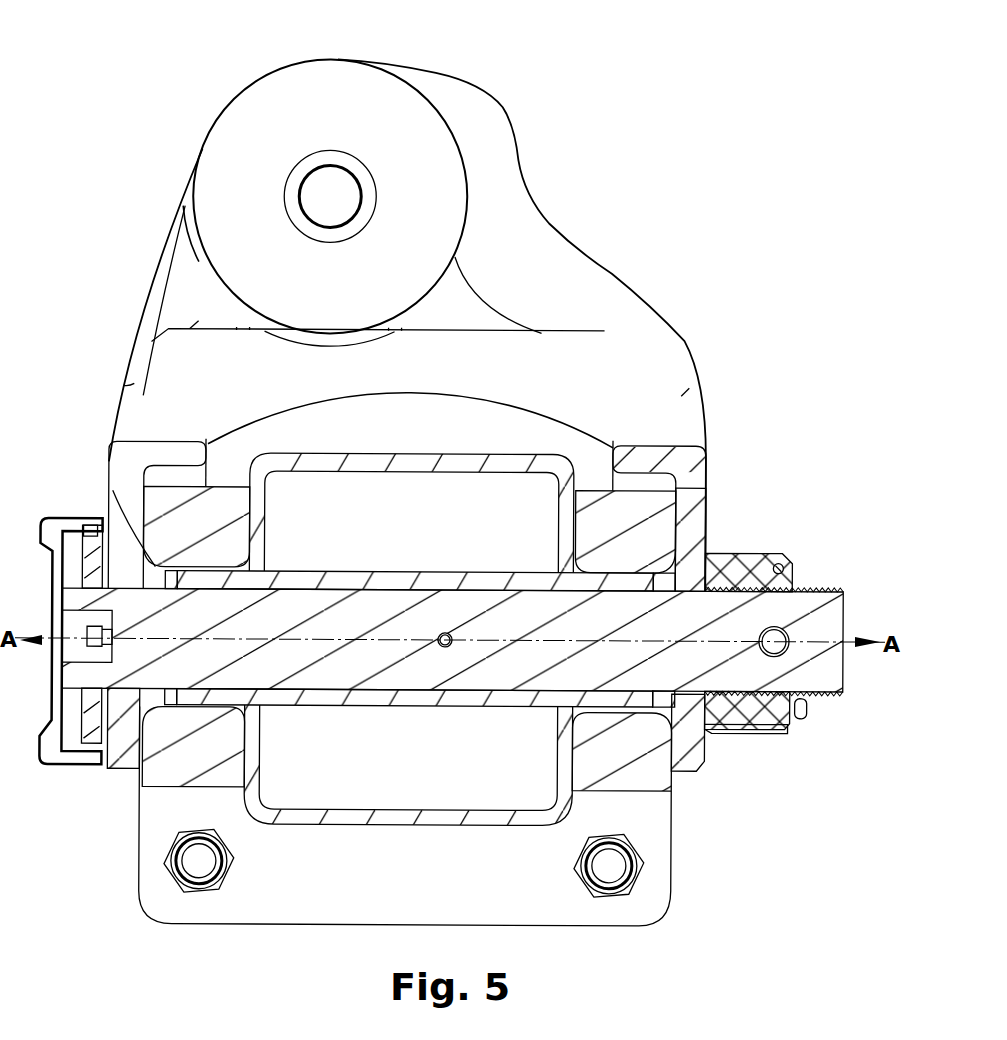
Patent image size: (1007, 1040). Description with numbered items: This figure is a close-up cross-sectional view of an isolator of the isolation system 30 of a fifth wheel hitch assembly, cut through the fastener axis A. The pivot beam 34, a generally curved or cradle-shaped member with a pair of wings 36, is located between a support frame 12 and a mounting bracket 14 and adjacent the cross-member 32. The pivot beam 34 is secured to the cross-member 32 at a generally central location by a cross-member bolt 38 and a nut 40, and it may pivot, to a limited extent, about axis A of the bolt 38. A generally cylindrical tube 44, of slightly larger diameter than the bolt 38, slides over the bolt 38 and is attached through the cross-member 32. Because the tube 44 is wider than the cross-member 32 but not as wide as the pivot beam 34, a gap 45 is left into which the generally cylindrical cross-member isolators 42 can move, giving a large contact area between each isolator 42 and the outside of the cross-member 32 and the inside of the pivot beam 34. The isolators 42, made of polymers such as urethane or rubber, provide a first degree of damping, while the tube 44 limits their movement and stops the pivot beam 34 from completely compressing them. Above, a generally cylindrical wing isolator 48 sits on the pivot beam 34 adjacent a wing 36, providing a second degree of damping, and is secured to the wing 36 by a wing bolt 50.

The support frame 12 is at (183, 770).
The mounting bracket 14 is at (532, 892).
The isolation system 30 is at (450, 504).
The cross-member 32 is at (353, 818).
The pivot beam 34 is at (108, 507).
The wing 36 is at (617, 313).
The cross-member bolt 38 is at (813, 637).
The nut 40 is at (738, 578).
The cross-member isolator 42 is at (178, 527).
The tube 44 is at (327, 697).
The gap 45 is at (157, 572).
The wing isolator 48 is at (300, 90).
The wing bolt 50 is at (330, 190).